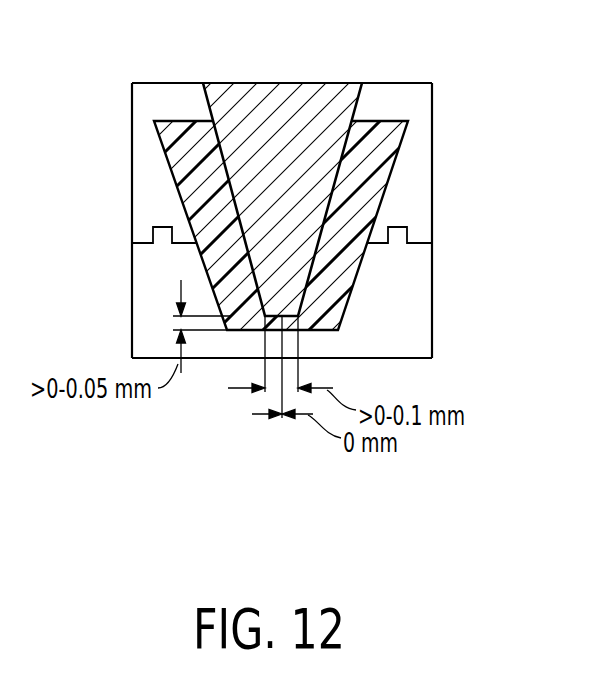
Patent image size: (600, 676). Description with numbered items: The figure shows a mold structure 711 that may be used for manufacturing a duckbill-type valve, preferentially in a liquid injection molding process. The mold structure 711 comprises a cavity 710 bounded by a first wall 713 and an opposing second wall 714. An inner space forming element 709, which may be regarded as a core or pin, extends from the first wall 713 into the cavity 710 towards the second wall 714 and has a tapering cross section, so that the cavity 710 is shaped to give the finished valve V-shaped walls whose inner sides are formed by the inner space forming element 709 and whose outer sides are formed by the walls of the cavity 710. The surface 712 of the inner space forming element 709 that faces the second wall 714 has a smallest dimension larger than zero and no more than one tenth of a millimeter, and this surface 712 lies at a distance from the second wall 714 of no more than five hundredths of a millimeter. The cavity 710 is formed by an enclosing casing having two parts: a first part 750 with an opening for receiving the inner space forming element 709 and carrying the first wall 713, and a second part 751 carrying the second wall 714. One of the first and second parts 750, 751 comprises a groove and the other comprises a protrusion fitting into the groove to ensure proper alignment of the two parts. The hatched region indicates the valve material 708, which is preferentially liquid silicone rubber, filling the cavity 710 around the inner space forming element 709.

The valve material 708 is at (375, 220).
The inner space forming element 709 is at (365, 95).
The cavity 710 is at (193, 267).
The mold structure 711 is at (487, 66).
The surface of the inner space forming element 712 is at (299, 327).
The first wall 713 is at (168, 140).
The second wall 714 is at (241, 307).
The first part 750 is at (432, 107).
The second part 751 is at (432, 340).